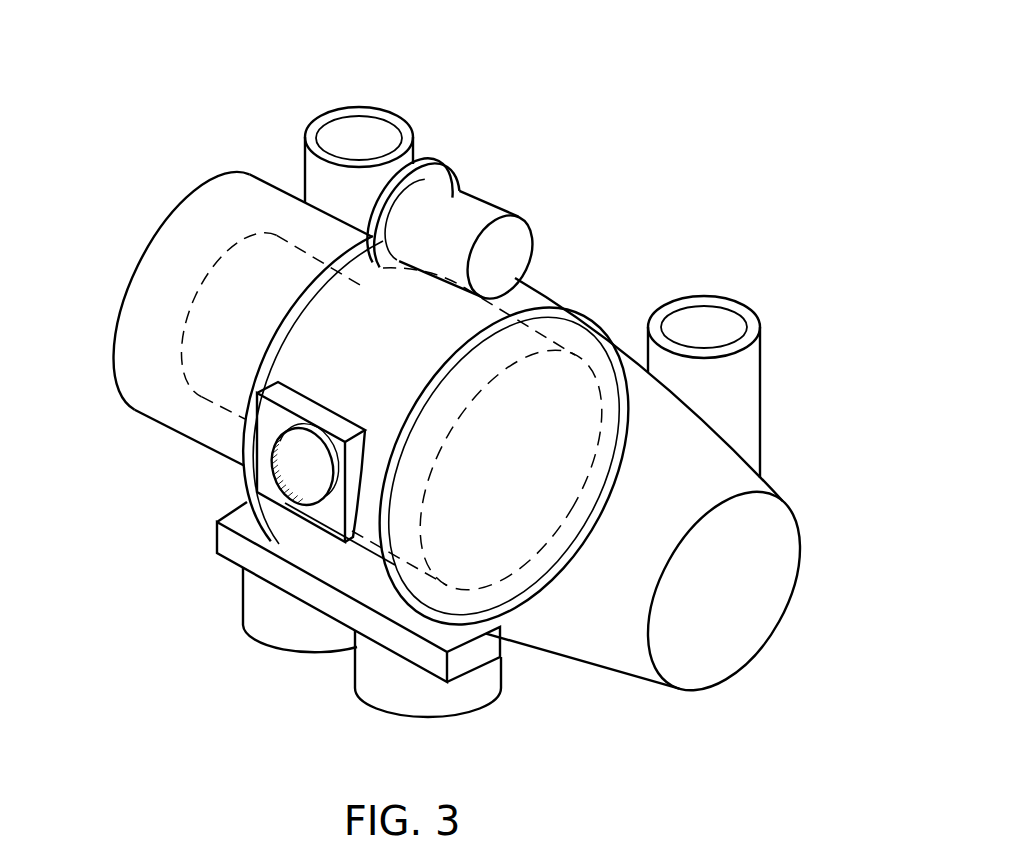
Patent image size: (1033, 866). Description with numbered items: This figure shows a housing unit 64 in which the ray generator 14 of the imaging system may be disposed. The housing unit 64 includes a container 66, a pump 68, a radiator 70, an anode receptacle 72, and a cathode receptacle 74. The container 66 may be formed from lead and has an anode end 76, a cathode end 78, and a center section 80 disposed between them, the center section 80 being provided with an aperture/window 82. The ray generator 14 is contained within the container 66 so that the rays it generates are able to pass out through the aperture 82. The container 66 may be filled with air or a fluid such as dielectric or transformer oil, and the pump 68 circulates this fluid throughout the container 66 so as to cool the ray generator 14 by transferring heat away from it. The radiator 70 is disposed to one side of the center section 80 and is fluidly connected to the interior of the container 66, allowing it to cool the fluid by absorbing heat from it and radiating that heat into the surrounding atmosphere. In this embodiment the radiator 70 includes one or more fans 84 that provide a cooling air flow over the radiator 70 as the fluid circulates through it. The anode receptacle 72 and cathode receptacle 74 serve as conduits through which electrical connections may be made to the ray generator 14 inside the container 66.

The ray generator 14 is at (500, 535).
The housing unit 64 is at (624, 60).
The container 66 is at (780, 593).
The pump 68 is at (520, 254).
The radiator 70 is at (232, 547).
The anode receptacle 72 is at (357, 106).
The cathode receptacle 74 is at (720, 300).
The anode end 76 is at (140, 436).
The cathode end 78 is at (615, 692).
The center section 80 is at (351, 563).
The aperture/window 82 is at (294, 473).
The fans 84 is at (275, 628).